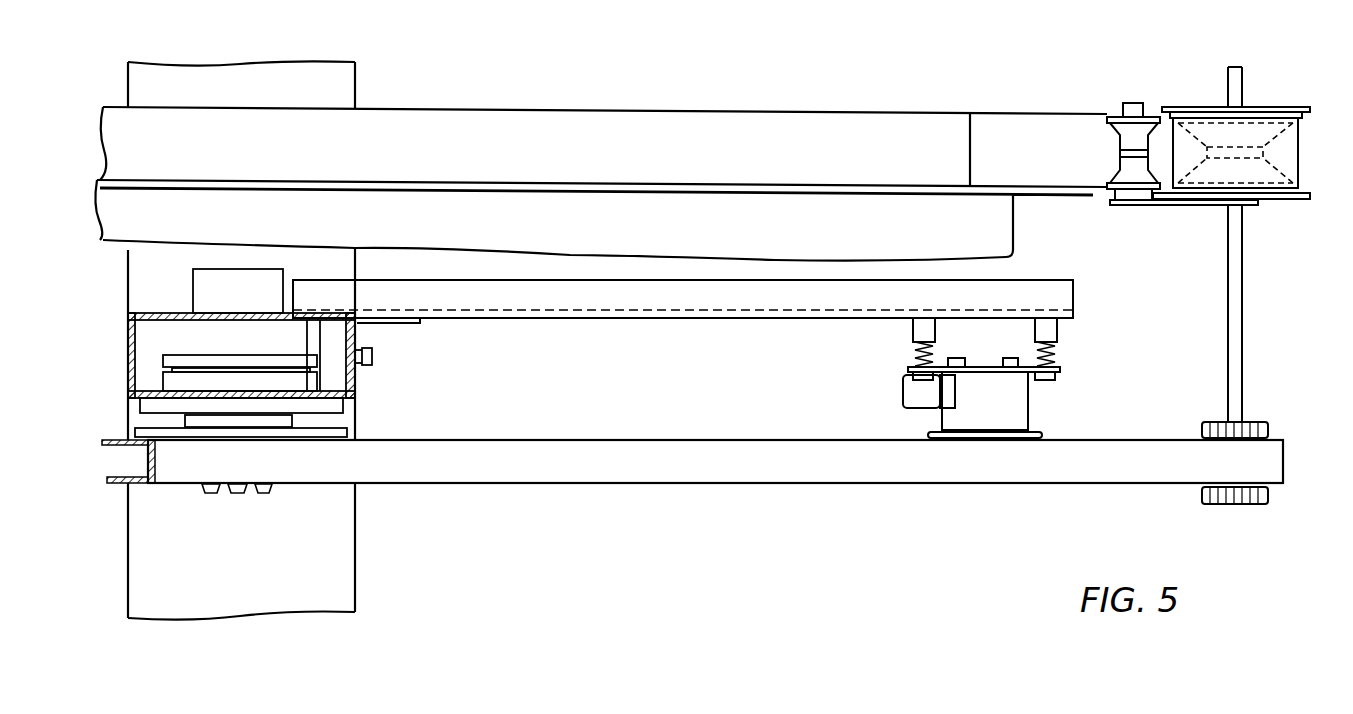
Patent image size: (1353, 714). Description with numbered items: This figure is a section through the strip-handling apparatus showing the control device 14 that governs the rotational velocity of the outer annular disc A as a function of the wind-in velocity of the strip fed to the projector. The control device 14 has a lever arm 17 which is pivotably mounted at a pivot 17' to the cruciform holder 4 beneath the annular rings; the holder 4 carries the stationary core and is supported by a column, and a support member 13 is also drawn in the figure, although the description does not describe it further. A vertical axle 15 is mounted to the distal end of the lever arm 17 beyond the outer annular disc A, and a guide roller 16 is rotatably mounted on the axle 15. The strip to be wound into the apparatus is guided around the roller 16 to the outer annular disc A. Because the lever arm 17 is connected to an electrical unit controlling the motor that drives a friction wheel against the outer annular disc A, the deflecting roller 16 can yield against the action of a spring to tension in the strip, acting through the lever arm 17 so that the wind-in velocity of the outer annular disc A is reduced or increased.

The cruciform holder 4 is at (357, 388).
The support beam 13 is at (322, 309).
The control device 14 is at (962, 490).
The vertical axle 15 is at (1243, 347).
The guide roller 16 is at (1207, 128).
The lever arm 17 is at (692, 485).
The pivot 17' is at (265, 417).
The outer annular disc A is at (1017, 244).